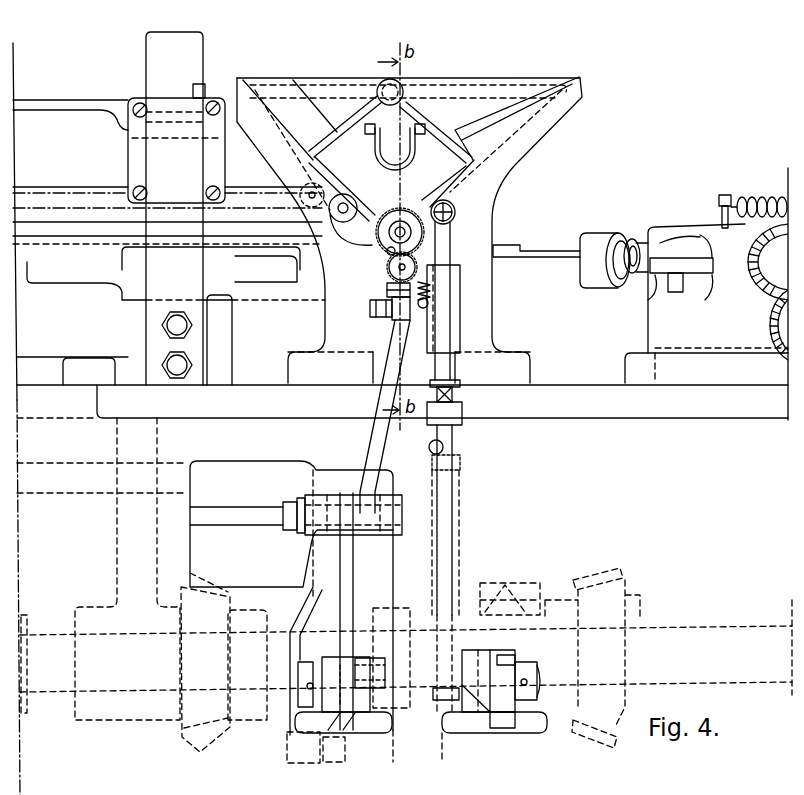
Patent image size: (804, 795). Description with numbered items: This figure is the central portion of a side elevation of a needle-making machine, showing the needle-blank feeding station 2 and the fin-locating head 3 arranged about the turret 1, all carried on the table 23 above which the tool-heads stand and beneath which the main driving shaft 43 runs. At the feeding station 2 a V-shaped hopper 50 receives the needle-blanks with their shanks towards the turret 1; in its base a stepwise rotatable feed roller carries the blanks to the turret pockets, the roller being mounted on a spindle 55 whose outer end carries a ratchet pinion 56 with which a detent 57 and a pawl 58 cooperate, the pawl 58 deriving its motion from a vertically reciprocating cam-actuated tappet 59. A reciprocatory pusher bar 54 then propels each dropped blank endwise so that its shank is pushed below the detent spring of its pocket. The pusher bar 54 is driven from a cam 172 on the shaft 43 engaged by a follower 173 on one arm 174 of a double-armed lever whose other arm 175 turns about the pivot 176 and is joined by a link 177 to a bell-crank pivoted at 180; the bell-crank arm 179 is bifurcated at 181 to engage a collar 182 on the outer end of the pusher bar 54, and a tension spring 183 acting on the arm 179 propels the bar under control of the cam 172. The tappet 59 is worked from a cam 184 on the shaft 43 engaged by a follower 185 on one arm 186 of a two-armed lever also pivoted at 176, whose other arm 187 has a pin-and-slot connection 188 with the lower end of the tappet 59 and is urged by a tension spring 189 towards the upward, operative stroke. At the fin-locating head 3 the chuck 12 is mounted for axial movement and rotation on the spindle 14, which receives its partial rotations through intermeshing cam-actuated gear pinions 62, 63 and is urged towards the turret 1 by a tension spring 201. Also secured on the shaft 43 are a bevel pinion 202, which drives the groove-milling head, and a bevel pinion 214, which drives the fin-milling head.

The turret 1 is at (538, 283).
The feeding station 2 is at (409, 230).
The fin-locating head 3 is at (701, 303).
The chuck 12 is at (605, 260).
The spindle 14 is at (635, 256).
The table 23 is at (566, 388).
The main driving shaft 43 is at (752, 643).
The V-shaped hopper 50 is at (476, 84).
The pusher bar 54 is at (390, 270).
The spindle 55 is at (388, 213).
The ratchet pinion 56 is at (385, 253).
The detent 57 is at (350, 224).
The pawl 58 is at (440, 200).
The tappet 59 is at (445, 252).
The gear pinion 62 is at (770, 238).
The gear pinion 63 is at (782, 352).
The cam 172 is at (308, 613).
The follower 173 is at (307, 767).
The lever arm 174 is at (343, 753).
The lever arm 175 is at (370, 695).
The pivot 176 is at (297, 680).
The link 177 is at (348, 587).
The bell-crank arm 179 is at (393, 370).
The pivot 180 is at (393, 530).
The bifurcation 181 is at (383, 287).
The collar 182 is at (393, 283).
The tension spring 183 is at (377, 317).
The cam 184 is at (505, 718).
The follower 185 is at (505, 580).
The lever arm 186 is at (512, 663).
The lever arm 187 is at (485, 642).
The pin-and-slot connection 188 is at (430, 690).
The tension spring 189 is at (460, 545).
The tension spring 201 is at (755, 197).
The bevel pinion 202 is at (620, 583).
The bevel pinion 214 is at (213, 743).